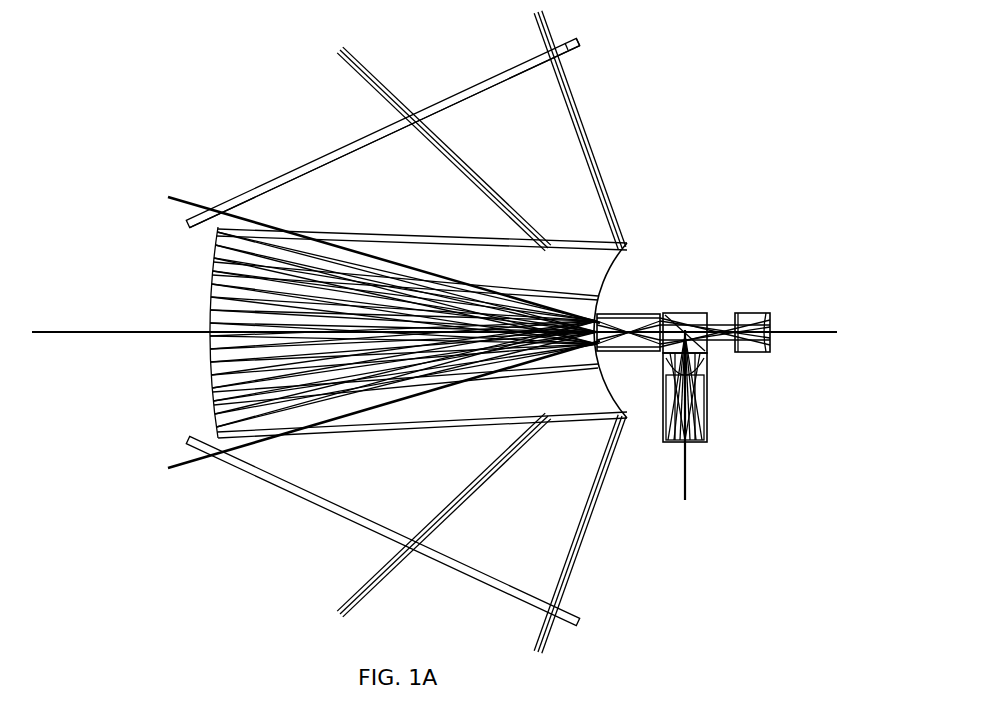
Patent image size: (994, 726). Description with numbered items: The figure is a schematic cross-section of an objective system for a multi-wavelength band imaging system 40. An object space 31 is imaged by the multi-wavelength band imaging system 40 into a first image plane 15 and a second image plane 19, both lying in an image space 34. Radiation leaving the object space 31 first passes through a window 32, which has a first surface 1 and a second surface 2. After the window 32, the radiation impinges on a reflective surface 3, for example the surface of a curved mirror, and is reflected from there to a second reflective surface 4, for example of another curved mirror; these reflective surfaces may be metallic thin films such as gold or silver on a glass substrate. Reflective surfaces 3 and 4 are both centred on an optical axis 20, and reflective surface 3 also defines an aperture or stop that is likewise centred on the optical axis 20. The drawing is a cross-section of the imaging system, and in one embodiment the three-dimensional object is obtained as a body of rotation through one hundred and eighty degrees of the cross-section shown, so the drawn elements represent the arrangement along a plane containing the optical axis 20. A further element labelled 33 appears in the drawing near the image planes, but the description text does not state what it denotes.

The first surface 1 is at (494, 74).
The second surface 2 is at (480, 94).
The reflective surface 3 is at (616, 272).
The second reflective surface 4 is at (208, 262).
The first image plane 15 is at (700, 443).
The second image plane 19 is at (770, 347).
The optical axis 20 is at (80, 331).
The object space 31 is at (236, 121).
The window 32 is at (587, 42).
The beam splitter cube 33 is at (698, 294).
The image space 34 is at (790, 444).
The multi-wavelength band imaging system 40 is at (690, 601).